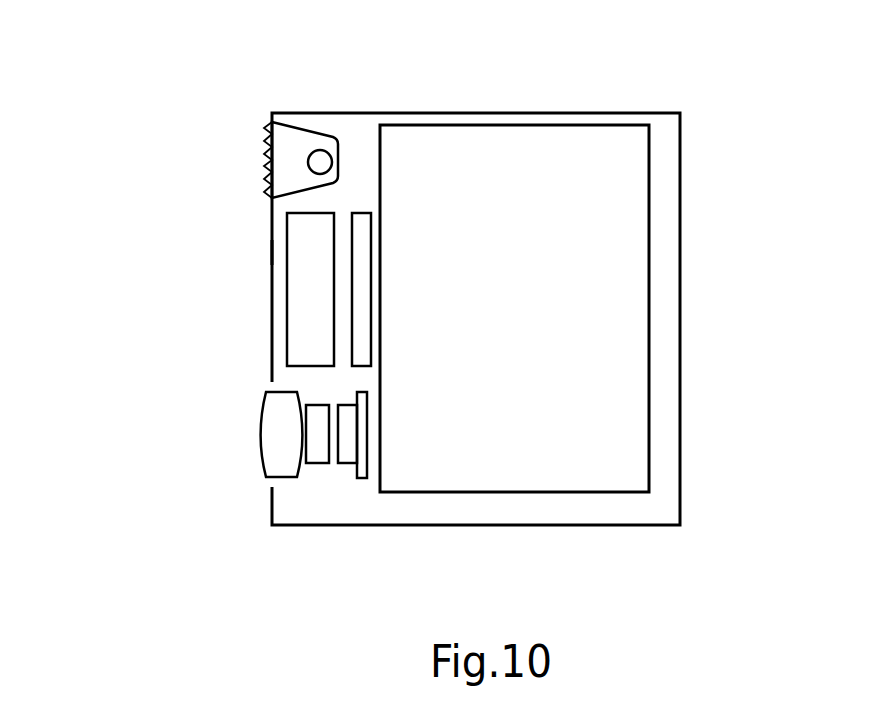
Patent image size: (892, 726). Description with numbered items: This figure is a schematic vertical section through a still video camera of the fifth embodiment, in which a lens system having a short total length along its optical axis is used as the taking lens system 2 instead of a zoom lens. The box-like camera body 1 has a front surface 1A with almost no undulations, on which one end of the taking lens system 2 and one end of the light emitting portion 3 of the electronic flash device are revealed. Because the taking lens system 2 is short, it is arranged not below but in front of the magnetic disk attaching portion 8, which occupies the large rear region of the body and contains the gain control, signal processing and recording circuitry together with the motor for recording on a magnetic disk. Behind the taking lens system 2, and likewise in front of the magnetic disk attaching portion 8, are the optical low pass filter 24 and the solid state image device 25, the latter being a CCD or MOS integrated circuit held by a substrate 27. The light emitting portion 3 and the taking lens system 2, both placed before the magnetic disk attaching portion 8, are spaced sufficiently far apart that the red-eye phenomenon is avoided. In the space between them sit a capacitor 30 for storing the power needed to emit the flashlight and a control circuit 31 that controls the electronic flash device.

The camera body 1 is at (662, 233).
The front surface 1A is at (272, 253).
The taking lens system 2 is at (262, 445).
The light emitting portion 3 is at (262, 157).
The magnetic disk attaching portion 8 is at (533, 150).
The optical low pass filter 24 is at (315, 457).
The solid state image device 25 is at (347, 462).
The substrate 27 is at (360, 478).
The capacitor 30 is at (361, 213).
The control circuit 31 is at (297, 322).